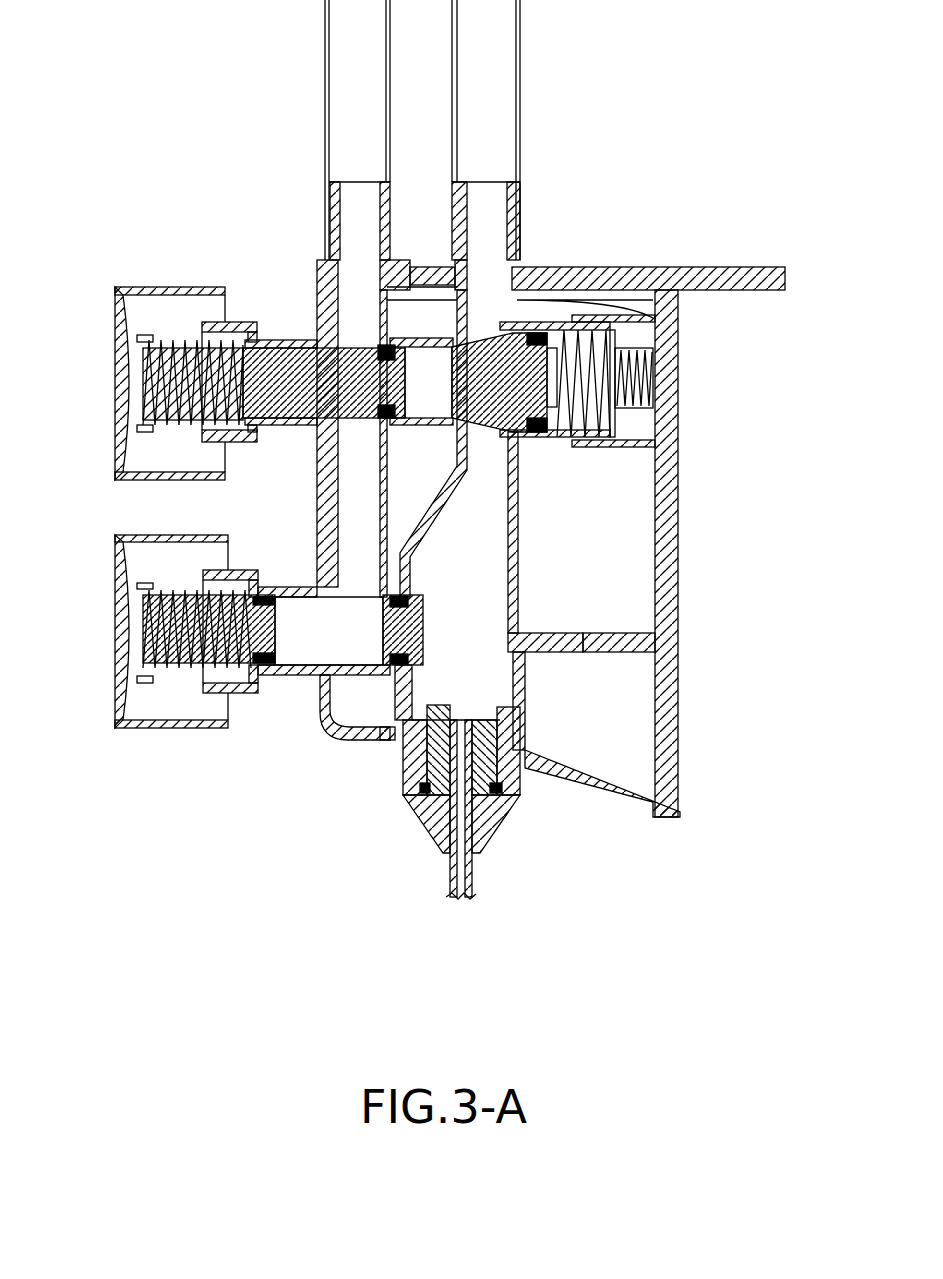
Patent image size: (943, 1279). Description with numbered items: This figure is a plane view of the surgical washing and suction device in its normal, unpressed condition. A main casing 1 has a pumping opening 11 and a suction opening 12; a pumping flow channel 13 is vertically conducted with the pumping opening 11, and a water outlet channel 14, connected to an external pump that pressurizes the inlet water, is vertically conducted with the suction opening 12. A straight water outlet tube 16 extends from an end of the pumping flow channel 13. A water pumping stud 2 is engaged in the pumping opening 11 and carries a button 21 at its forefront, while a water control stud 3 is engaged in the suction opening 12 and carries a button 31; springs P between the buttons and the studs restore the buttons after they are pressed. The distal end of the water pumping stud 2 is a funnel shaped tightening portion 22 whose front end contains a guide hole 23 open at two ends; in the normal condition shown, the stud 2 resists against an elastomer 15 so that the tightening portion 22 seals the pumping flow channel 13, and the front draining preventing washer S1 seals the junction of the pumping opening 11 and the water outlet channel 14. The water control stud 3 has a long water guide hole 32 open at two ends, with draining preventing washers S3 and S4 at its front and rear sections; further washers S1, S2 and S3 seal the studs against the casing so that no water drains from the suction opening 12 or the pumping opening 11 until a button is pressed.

The main casing 1 is at (668, 528).
The water pumping stud 2 is at (300, 425).
The water control stud 3 is at (285, 590).
The pumping opening 11 is at (300, 343).
The suction opening 12 is at (295, 673).
The pumping flow channel 13 is at (502, 118).
The water outlet channel 14 is at (335, 112).
The elastomer 15 is at (630, 368).
The water outlet tube 16 is at (462, 792).
The button 21 is at (173, 292).
The tightening portion 22 is at (512, 440).
The guide hole 23 is at (440, 407).
The button 31 is at (158, 727).
The water guide hole 32 is at (330, 647).
The spring P is at (130, 373).
The draining preventing washer S1 is at (385, 350).
The second seal S2 is at (540, 342).
The draining preventing washer S3 is at (250, 695).
The draining preventing washer S4 is at (402, 722).